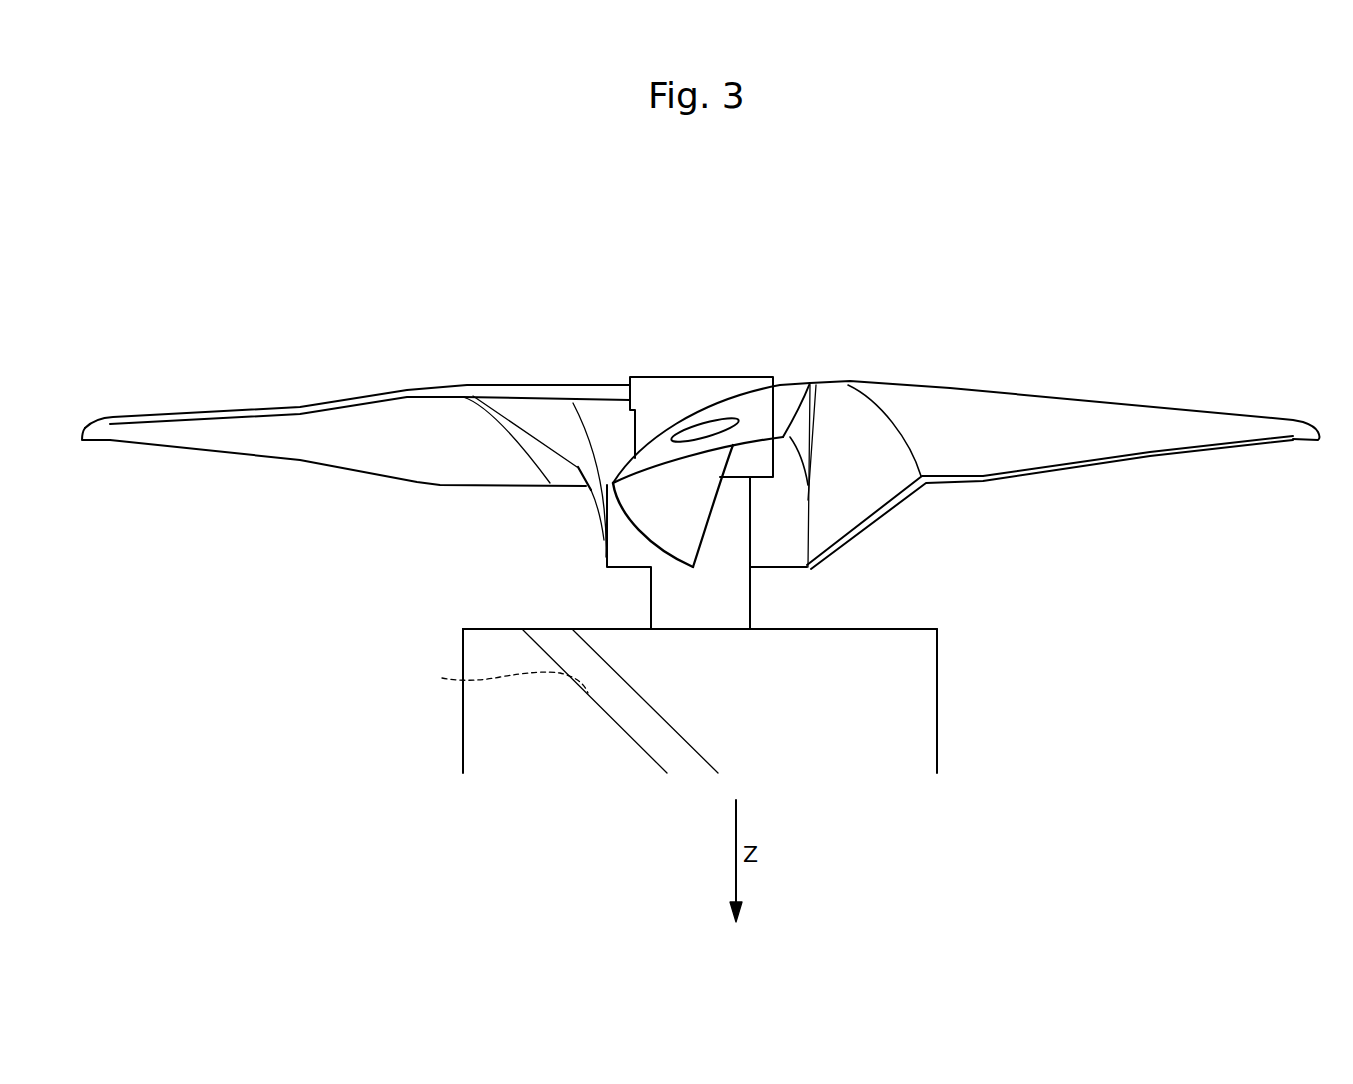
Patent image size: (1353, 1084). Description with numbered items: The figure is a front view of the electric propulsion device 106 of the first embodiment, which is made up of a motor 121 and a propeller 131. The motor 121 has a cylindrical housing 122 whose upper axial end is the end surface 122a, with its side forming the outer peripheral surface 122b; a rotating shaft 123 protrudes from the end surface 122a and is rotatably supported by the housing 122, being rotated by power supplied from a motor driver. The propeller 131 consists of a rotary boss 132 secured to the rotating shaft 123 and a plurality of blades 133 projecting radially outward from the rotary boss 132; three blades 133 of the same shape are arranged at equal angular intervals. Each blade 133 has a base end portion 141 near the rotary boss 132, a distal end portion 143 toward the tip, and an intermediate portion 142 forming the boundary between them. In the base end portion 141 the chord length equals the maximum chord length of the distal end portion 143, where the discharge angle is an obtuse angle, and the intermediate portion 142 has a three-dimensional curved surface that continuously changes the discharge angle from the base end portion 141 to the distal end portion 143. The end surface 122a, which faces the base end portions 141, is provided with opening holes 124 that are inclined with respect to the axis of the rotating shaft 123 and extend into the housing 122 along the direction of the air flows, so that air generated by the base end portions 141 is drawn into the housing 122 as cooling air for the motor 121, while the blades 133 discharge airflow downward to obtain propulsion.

The electric propulsion device 106 is at (985, 302).
The motor 121 is at (930, 624).
The housing 122 is at (872, 670).
The end surface 122a is at (493, 628).
The outer peripheral surface 122b is at (460, 657).
The rotating shaft 123 is at (727, 602).
The opening holes 124 is at (491, 678).
The propeller 131 is at (1160, 401).
The rotary boss 132 is at (658, 385).
The blades 133 is at (403, 410).
The base end portion 141 is at (620, 550).
The intermediate portion 142 is at (538, 447).
The distal end portion 143 is at (350, 445).